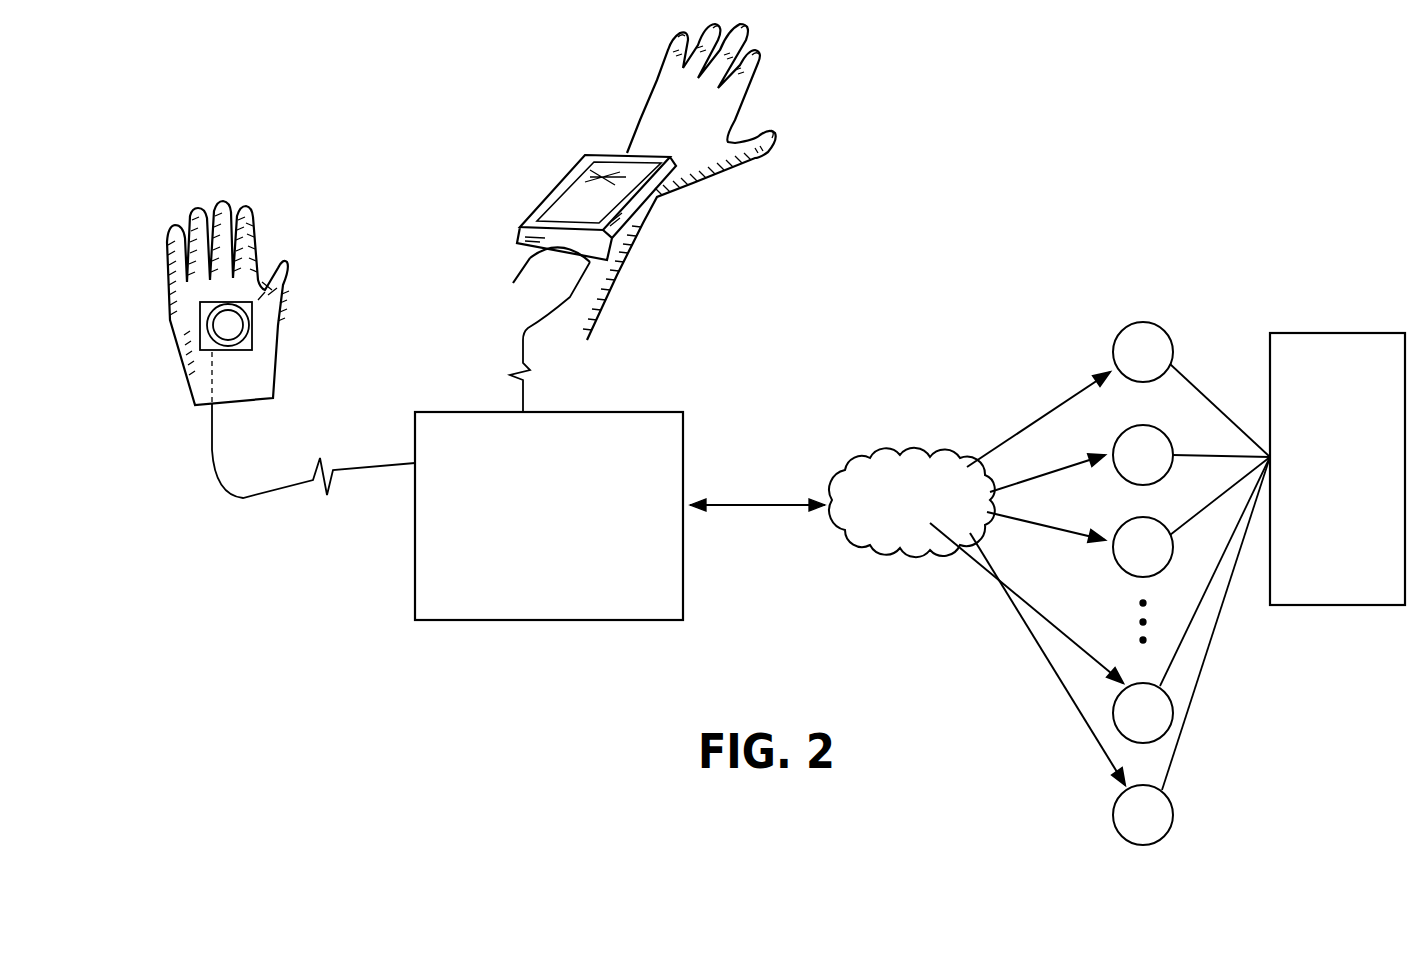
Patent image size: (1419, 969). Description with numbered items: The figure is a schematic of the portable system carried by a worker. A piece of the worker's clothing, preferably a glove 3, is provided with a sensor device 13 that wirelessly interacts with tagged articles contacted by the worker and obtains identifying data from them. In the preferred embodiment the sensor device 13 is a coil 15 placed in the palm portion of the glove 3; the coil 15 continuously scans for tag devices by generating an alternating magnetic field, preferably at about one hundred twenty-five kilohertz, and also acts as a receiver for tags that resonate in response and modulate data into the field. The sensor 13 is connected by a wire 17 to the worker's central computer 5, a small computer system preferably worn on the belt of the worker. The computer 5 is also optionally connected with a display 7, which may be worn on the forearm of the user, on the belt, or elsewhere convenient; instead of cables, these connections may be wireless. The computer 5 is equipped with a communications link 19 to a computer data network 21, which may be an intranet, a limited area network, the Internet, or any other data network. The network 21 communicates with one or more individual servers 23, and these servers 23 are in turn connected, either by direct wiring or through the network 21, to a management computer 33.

The glove 3 is at (248, 234).
The central computer 5 is at (643, 410).
The display 7 is at (583, 162).
The sensor device 13 is at (253, 340).
The coil 15 is at (207, 332).
The wire 17 is at (250, 500).
The communications link 19 is at (783, 510).
The computer data network 21 is at (932, 400).
The servers 23 is at (1156, 827).
The management computer 33 is at (1322, 464).